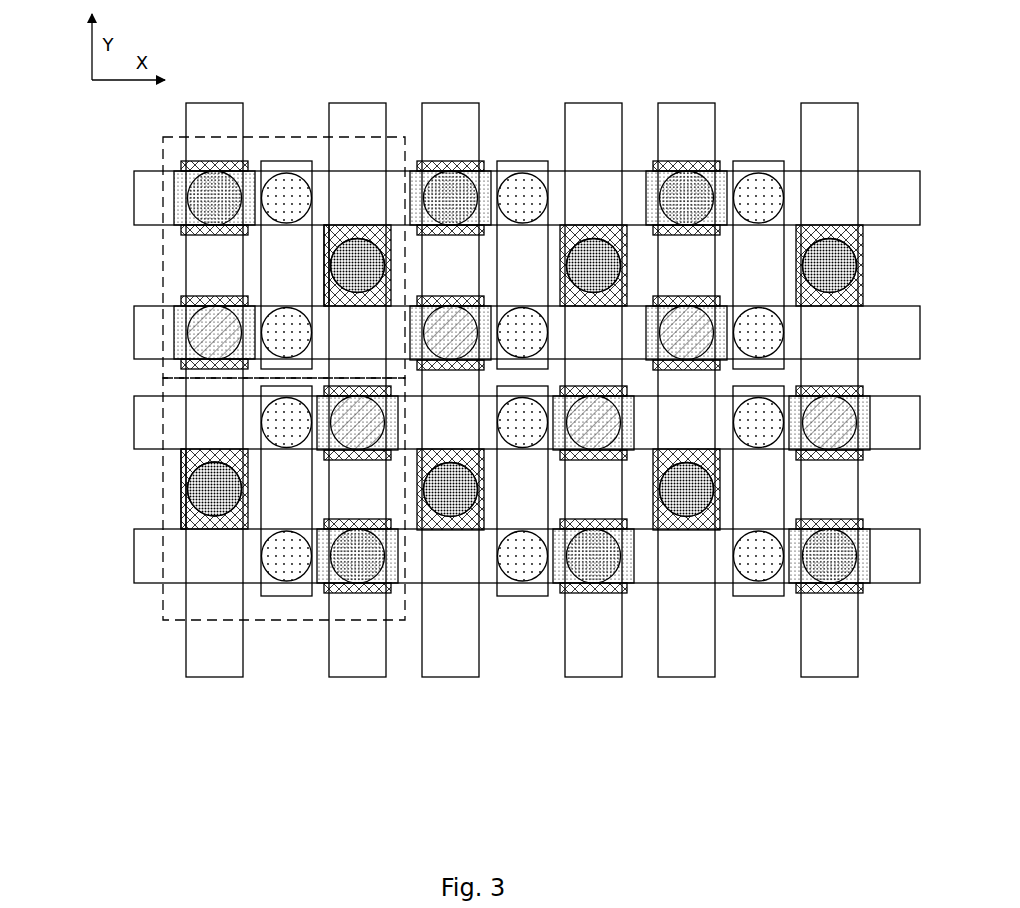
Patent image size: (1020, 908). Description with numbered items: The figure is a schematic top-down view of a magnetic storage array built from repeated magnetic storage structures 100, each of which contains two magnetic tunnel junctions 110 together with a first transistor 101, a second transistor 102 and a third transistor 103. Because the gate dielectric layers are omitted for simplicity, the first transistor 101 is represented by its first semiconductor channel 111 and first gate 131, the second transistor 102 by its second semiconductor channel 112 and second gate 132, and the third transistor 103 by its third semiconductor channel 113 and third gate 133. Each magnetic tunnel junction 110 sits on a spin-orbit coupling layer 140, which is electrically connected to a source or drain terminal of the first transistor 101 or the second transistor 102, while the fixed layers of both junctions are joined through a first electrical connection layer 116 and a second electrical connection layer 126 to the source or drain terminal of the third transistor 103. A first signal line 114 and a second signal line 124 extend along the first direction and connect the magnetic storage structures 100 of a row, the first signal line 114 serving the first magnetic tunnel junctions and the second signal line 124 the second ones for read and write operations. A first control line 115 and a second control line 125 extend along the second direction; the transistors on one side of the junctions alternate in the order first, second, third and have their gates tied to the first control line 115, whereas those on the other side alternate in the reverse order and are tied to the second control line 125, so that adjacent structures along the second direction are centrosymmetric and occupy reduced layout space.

The magnetic storage structure 100 is at (160, 372).
The first transistor 101 is at (280, 411).
The second transistor 102 is at (166, 299).
The third transistor 103 is at (272, 272).
The magnetic tunnel junction 110 is at (327, 698).
The first semiconductor channel 111 is at (213, 197).
The second semiconductor channel 112 is at (215, 333).
The third semiconductor channel 113 is at (360, 263).
The first signal line 114 is at (882, 196).
The first control line 115 is at (207, 640).
The first electrical connection layer 116 is at (307, 163).
The second signal line 124 is at (882, 328).
The second control line 125 is at (352, 643).
The second electrical connection layer 126 is at (318, 263).
The first gate 131 is at (193, 166).
The second gate 132 is at (190, 301).
The third gate 133 is at (347, 237).
The spin-orbit coupling layer 140 is at (253, 187).